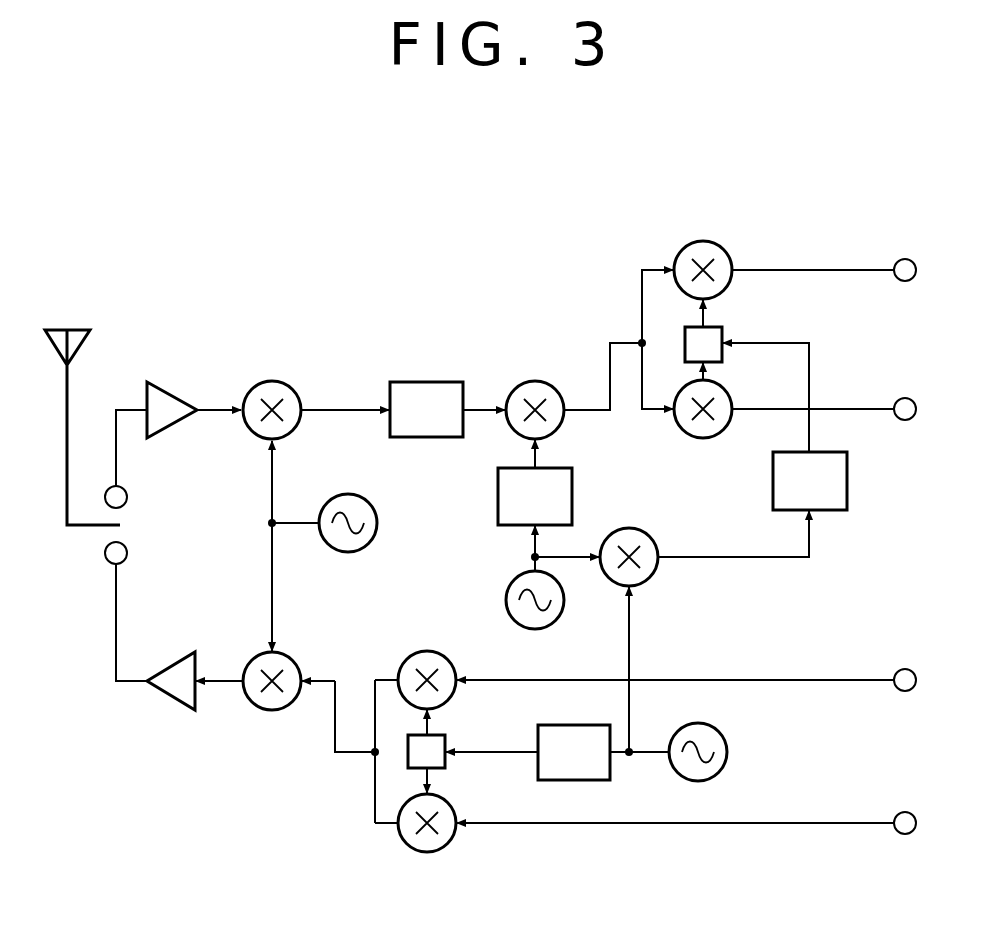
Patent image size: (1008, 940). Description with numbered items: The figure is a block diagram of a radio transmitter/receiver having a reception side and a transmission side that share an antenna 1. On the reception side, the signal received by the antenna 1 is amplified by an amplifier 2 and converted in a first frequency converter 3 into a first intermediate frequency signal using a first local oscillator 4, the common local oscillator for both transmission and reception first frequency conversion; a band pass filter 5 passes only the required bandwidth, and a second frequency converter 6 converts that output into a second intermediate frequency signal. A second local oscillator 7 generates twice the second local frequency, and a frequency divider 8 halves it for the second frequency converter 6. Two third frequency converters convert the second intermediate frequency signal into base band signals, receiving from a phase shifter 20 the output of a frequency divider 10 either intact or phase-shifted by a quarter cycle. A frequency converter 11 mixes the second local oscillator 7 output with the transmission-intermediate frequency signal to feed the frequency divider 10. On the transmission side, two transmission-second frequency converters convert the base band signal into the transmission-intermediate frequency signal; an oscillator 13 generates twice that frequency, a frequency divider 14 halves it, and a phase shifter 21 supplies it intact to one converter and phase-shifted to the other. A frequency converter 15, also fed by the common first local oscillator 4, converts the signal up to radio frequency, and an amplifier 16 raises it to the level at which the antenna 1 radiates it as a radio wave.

The antenna 1 is at (67, 330).
The amplifier 2 is at (172, 392).
The first frequency converter 3 is at (272, 380).
The first local oscillator 4 is at (377, 525).
The band pass filter 5 is at (425, 382).
The second frequency converter 6 is at (535, 381).
The second local oscillator 7 is at (512, 585).
The frequency divider 8 is at (572, 497).
The frequency divider 10 is at (847, 485).
The frequency converter 11 is at (655, 578).
The oscillator 13 is at (702, 781).
The frequency divider 14 is at (612, 768).
The frequency converter 15 is at (272, 710).
The amplifier 16 is at (178, 712).
The phase shifter 20 is at (722, 353).
The phase shifter 21 is at (448, 740).